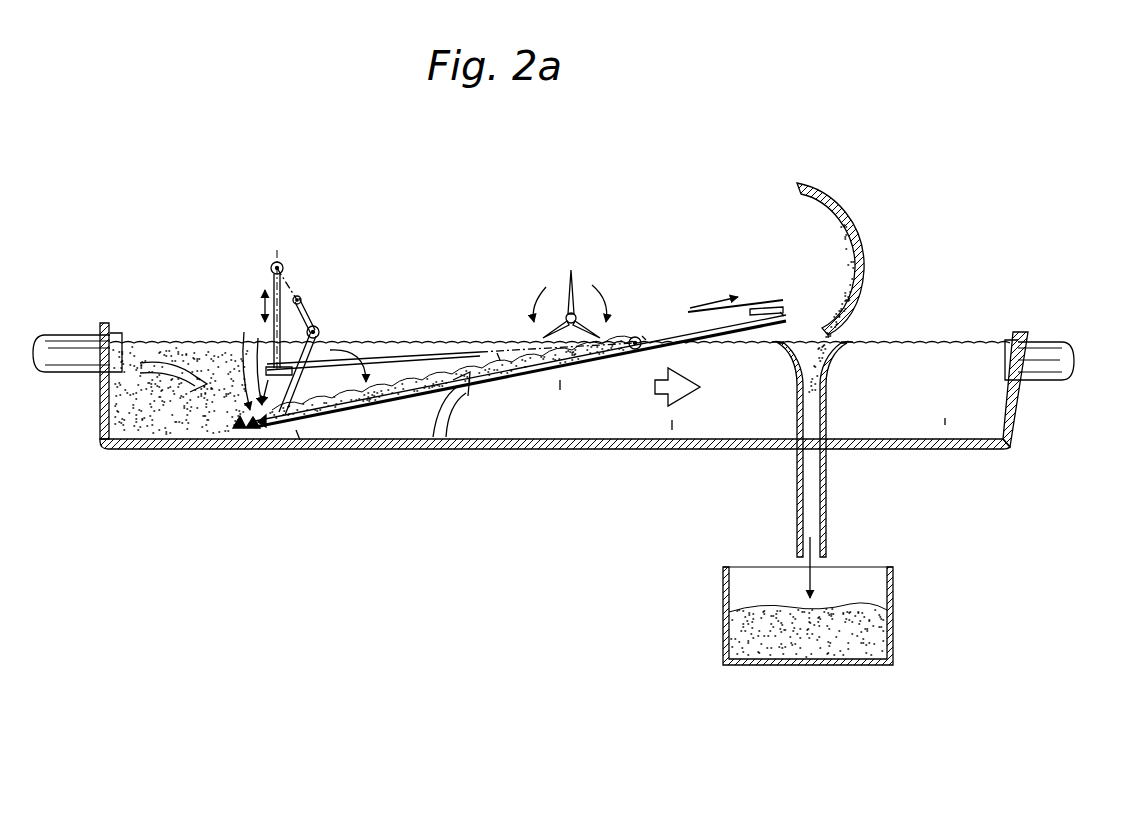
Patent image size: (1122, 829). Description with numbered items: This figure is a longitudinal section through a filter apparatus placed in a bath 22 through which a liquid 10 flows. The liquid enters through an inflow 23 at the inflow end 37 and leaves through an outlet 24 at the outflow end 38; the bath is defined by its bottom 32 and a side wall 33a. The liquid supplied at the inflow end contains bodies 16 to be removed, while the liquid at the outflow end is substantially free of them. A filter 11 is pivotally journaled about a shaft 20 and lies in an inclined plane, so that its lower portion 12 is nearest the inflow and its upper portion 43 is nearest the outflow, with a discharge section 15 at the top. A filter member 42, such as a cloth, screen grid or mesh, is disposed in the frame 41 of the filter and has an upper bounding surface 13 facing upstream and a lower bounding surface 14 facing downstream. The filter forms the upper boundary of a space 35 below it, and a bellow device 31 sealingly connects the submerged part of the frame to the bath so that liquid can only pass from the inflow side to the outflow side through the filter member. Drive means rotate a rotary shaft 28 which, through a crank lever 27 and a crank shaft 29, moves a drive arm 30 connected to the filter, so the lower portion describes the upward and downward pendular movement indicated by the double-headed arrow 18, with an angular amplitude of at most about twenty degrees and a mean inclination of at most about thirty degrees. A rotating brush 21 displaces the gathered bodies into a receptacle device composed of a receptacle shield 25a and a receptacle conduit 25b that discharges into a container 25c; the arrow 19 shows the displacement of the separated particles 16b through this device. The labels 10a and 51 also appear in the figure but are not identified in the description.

The liquid 10 is at (221, 358).
The tank 10a is at (672, 420).
The filter 11 is at (407, 343).
The lower portion of the filter 12 is at (485, 382).
The upper bounding surface 13 is at (362, 338).
The lower bounding surface 14 is at (393, 406).
The discharge section 15 is at (757, 310).
The bodies 16 is at (148, 420).
The particles 16b is at (843, 257).
The double-headed arrow 18 is at (254, 449).
The arrow 19 is at (710, 290).
The shaft 20 is at (638, 336).
The brush 21 is at (573, 276).
The bath 22 is at (567, 458).
The inflow 23 is at (80, 346).
The outlet 24 is at (1040, 350).
The receptacle shield 25a is at (814, 195).
The receptacle conduit 25b is at (826, 480).
The container 25c is at (723, 605).
The crank lever 27 is at (300, 297).
The rotary shaft 28 is at (283, 285).
The crank shaft 29 is at (280, 262).
The drive arm 30 is at (320, 345).
The bellow device 31 is at (246, 345).
The bottom 32 is at (740, 448).
The side wall 33a is at (945, 418).
The space 35 is at (560, 380).
The inflow end 37 is at (105, 332).
The outflow end 38 is at (1018, 334).
The frame 41 is at (768, 312).
The filter member 42 is at (497, 353).
The upper portion of the filter 43 is at (642, 336).
The stop 51 is at (780, 312).